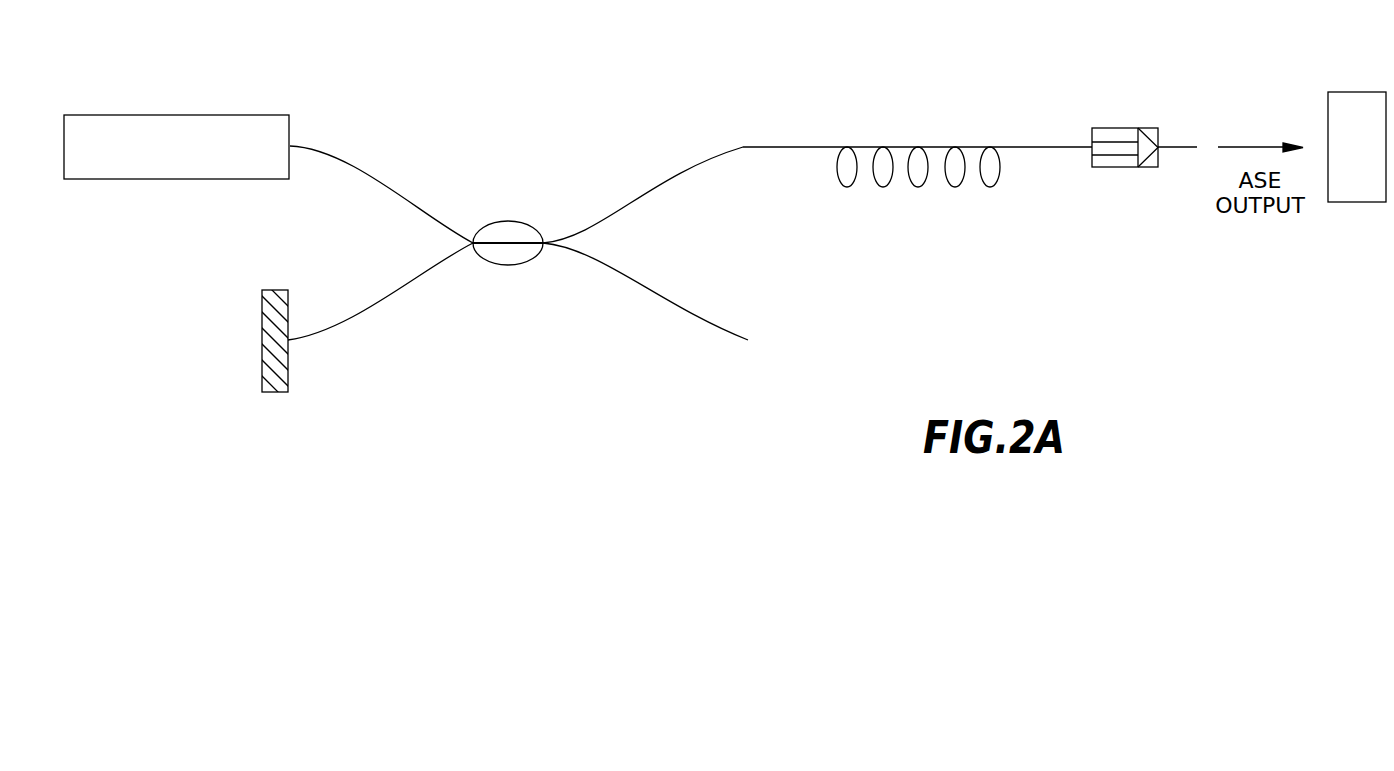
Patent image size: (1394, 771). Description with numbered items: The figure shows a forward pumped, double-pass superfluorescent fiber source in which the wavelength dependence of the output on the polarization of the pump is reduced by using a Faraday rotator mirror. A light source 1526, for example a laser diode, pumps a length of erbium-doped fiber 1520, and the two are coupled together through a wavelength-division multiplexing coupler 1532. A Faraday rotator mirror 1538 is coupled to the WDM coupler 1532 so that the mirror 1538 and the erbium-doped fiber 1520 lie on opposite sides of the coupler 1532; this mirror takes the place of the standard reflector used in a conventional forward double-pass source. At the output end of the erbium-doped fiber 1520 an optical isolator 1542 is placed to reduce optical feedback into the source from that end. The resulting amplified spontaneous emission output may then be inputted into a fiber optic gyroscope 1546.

The light source 1526 is at (176, 113).
The wavelength-division multiplexing (WDM) coupler 1532 is at (513, 148).
The erbium-doped fiber 1520 is at (953, 188).
The optical isolator 1542 is at (1113, 240).
The fiber optic gyroscope 1546 is at (1355, 203).
The Faraday rotator mirror 1538 is at (262, 362).